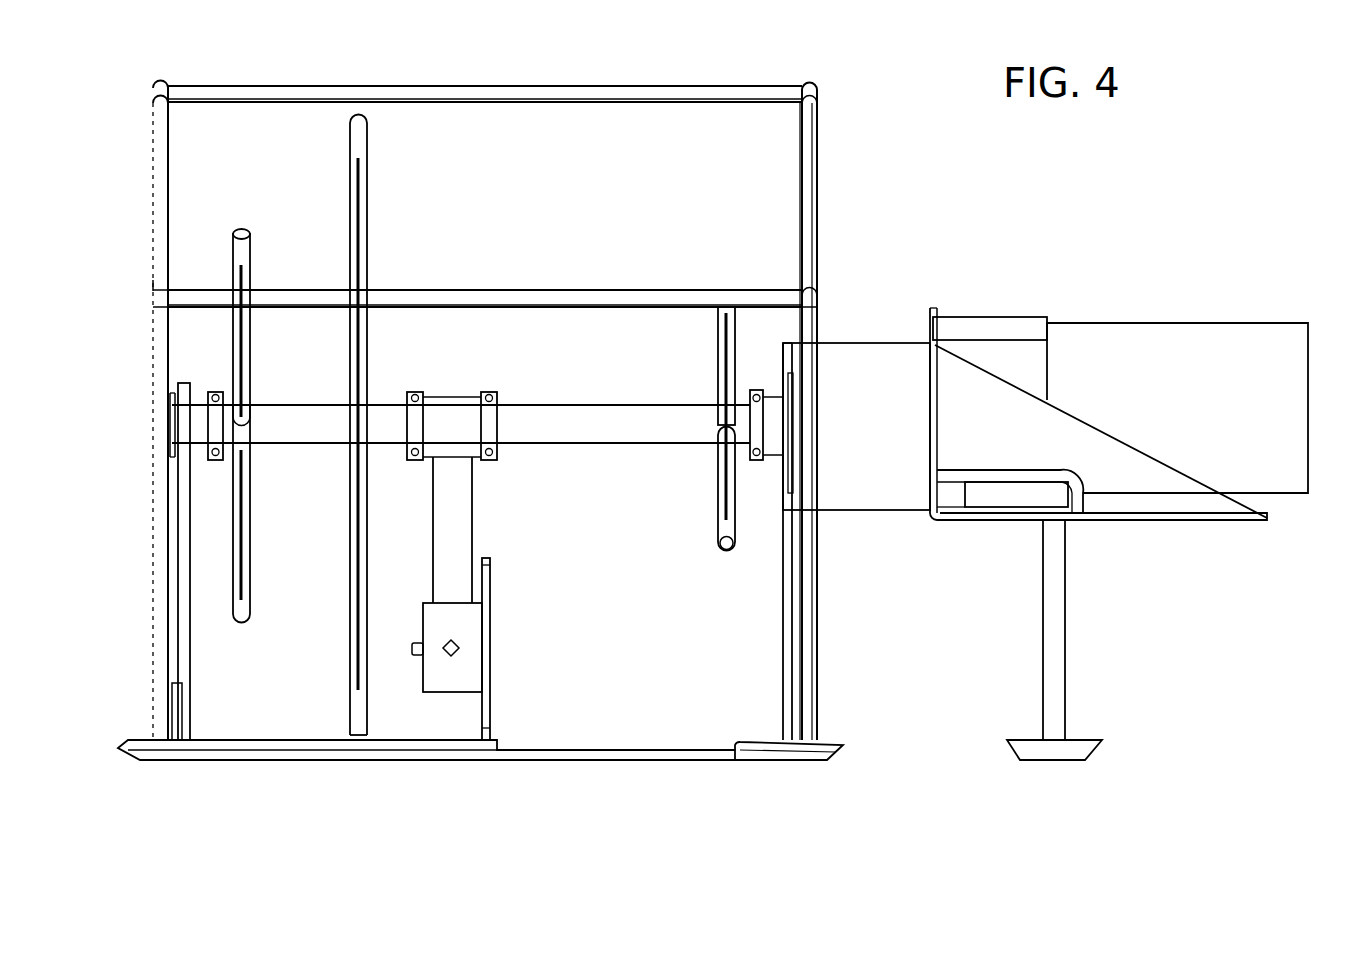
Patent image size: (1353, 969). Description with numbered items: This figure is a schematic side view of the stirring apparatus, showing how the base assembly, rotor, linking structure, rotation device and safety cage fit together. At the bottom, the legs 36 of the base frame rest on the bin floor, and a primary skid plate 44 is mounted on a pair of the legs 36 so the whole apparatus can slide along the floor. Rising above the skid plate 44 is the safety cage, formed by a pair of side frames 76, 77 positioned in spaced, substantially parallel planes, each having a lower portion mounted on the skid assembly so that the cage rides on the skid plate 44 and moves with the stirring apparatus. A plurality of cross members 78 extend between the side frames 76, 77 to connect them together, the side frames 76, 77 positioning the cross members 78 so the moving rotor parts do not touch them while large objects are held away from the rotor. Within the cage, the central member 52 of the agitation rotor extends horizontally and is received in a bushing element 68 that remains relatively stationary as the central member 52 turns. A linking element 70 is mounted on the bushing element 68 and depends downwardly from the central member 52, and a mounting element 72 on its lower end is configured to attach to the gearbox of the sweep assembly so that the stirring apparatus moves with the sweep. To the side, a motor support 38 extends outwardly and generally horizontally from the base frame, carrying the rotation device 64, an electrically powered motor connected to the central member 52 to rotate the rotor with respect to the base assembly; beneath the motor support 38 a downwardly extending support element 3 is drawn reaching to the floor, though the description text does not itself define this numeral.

The cross members 78 is at (532, 96).
The side frame 77 is at (808, 213).
The side frame 76 is at (161, 210).
The legs 36 is at (188, 674).
The central member 52 is at (528, 418).
The bushing element 68 is at (441, 414).
The linking element 70 is at (455, 541).
The mounting element 72 is at (486, 637).
The primary skid plate 44 is at (498, 748).
The rotation device 64 is at (1107, 342).
The motor support 38 is at (1137, 498).
The leg stand 3 is at (1055, 671).